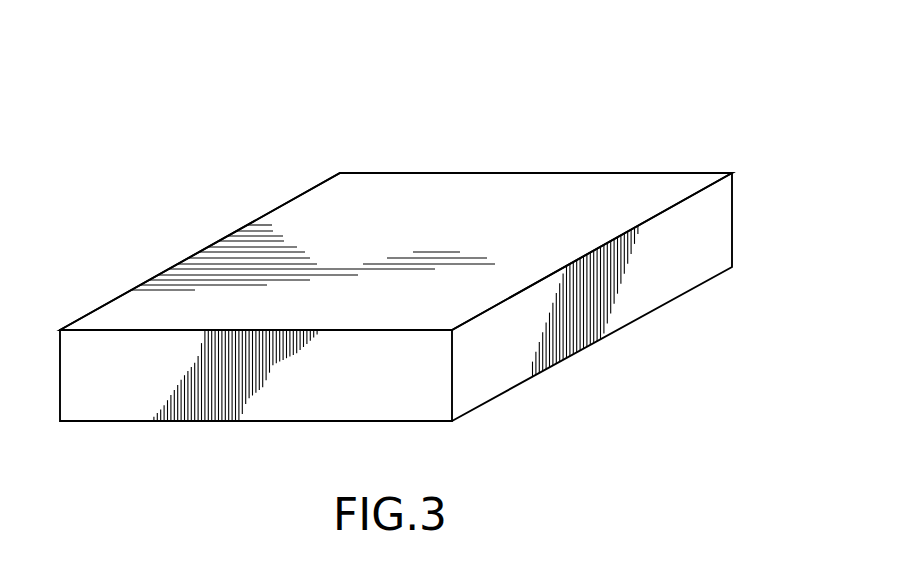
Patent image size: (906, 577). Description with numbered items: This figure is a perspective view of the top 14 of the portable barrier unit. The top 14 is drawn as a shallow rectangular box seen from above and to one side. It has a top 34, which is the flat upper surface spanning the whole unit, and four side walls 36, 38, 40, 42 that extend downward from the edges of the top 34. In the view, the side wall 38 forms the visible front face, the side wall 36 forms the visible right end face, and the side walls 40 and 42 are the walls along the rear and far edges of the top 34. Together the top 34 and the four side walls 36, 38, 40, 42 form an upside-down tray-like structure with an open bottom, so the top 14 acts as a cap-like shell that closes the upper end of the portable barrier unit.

The top 14 is at (94, 227).
The top 34 is at (396, 214).
The side wall 36 is at (562, 338).
The side wall 38 is at (265, 402).
The side wall 40 is at (235, 218).
The side wall 42 is at (478, 160).